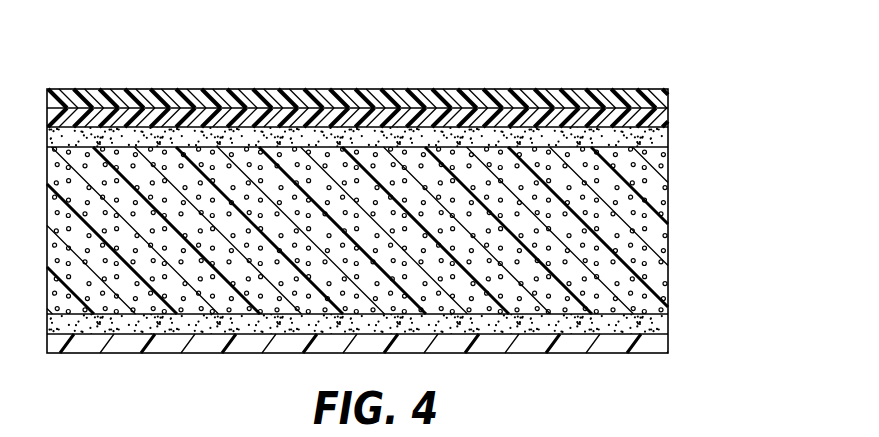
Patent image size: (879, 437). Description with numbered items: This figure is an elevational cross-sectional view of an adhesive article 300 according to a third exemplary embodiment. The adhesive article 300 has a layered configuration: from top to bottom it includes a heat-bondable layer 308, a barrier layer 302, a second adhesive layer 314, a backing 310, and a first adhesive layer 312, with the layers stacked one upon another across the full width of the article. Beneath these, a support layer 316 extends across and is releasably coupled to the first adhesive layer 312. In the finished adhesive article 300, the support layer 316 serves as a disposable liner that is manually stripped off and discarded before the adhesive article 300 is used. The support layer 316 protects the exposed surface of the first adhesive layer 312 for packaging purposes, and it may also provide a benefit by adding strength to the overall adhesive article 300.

The adhesive article 300 is at (606, 52).
The heat-bondable layer 308 is at (668, 98).
The barrier layer 302 is at (668, 119).
The second adhesive layer 314 is at (668, 137).
The backing 310 is at (660, 238).
The first adhesive layer 312 is at (668, 325).
The support layer 316 is at (660, 343).